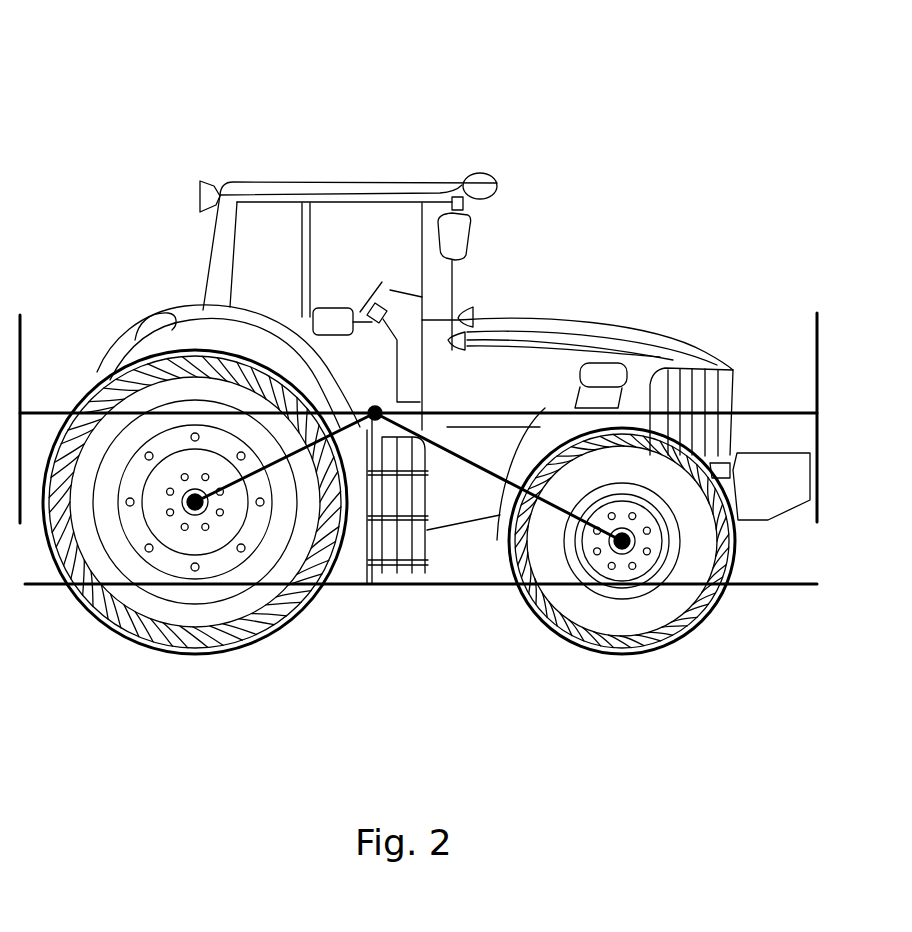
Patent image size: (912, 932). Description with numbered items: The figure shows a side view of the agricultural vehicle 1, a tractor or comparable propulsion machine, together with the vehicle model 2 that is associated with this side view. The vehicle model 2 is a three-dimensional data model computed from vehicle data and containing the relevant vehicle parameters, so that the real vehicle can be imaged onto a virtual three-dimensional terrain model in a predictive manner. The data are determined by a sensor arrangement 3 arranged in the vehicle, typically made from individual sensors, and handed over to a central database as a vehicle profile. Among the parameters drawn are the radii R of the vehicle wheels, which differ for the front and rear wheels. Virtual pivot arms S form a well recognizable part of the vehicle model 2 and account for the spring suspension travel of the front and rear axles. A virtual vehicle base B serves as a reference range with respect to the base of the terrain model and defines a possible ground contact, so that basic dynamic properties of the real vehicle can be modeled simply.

The agricultural vehicle 1 is at (343, 170).
The vehicle model 2 is at (786, 362).
The sensor arrangement 3 is at (376, 406).
The virtual pivot arms S is at (150, 342).
The radii of the vehicle wheels R is at (277, 627).
The virtual vehicle base B is at (753, 586).